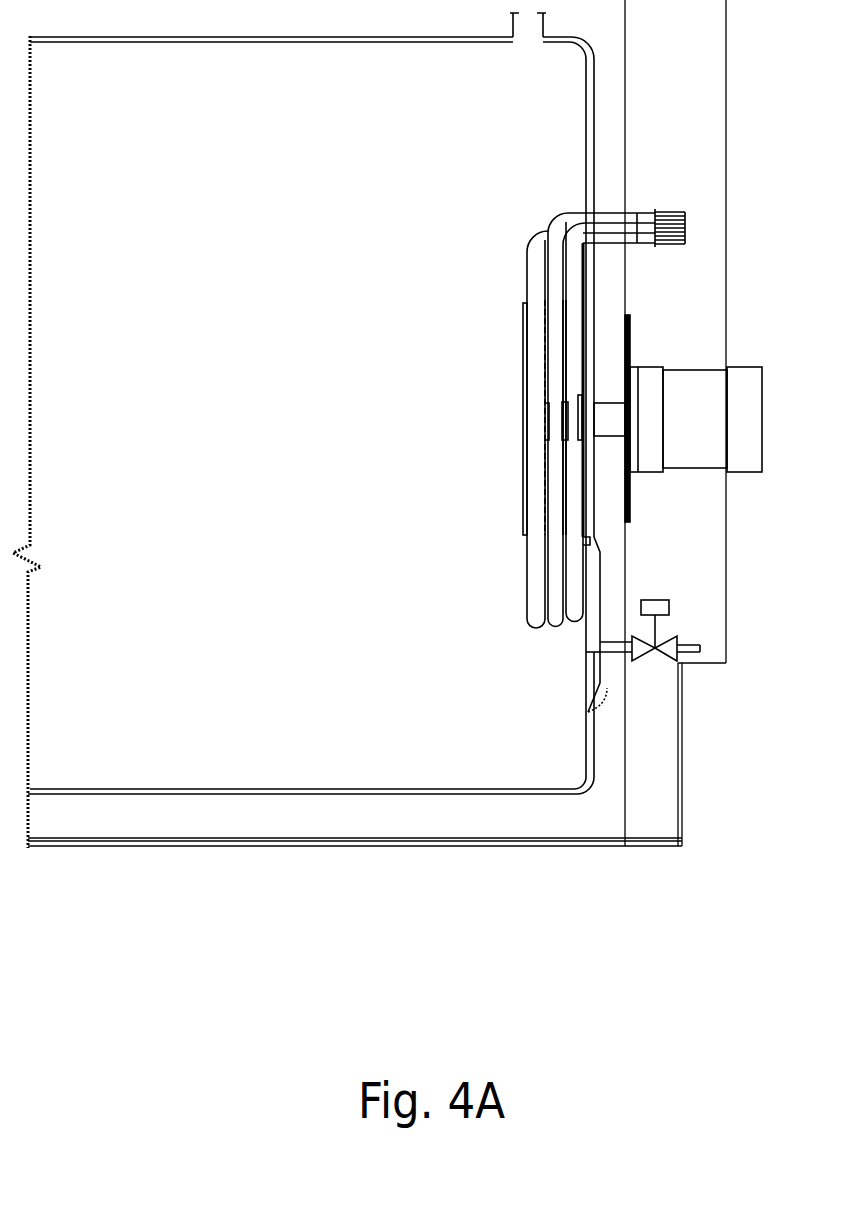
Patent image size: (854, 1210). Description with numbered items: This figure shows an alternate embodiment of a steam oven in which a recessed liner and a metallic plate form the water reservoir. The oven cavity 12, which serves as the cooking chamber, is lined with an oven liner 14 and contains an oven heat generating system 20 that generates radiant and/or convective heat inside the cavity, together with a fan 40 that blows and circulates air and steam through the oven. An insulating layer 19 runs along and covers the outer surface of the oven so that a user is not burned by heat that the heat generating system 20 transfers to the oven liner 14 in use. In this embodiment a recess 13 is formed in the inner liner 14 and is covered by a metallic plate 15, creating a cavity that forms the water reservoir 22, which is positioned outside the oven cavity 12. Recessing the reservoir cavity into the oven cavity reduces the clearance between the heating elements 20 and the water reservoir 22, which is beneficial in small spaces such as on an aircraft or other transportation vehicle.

The oven cavity 12 is at (302, 401).
The recess 13 is at (604, 700).
The oven liner 14 is at (587, 757).
The metallic plate 15 is at (586, 660).
The insulating layer 19 is at (695, 316).
The oven heat generating system 20 is at (537, 256).
The water reservoir 22 is at (603, 592).
The fan 40 is at (527, 433).